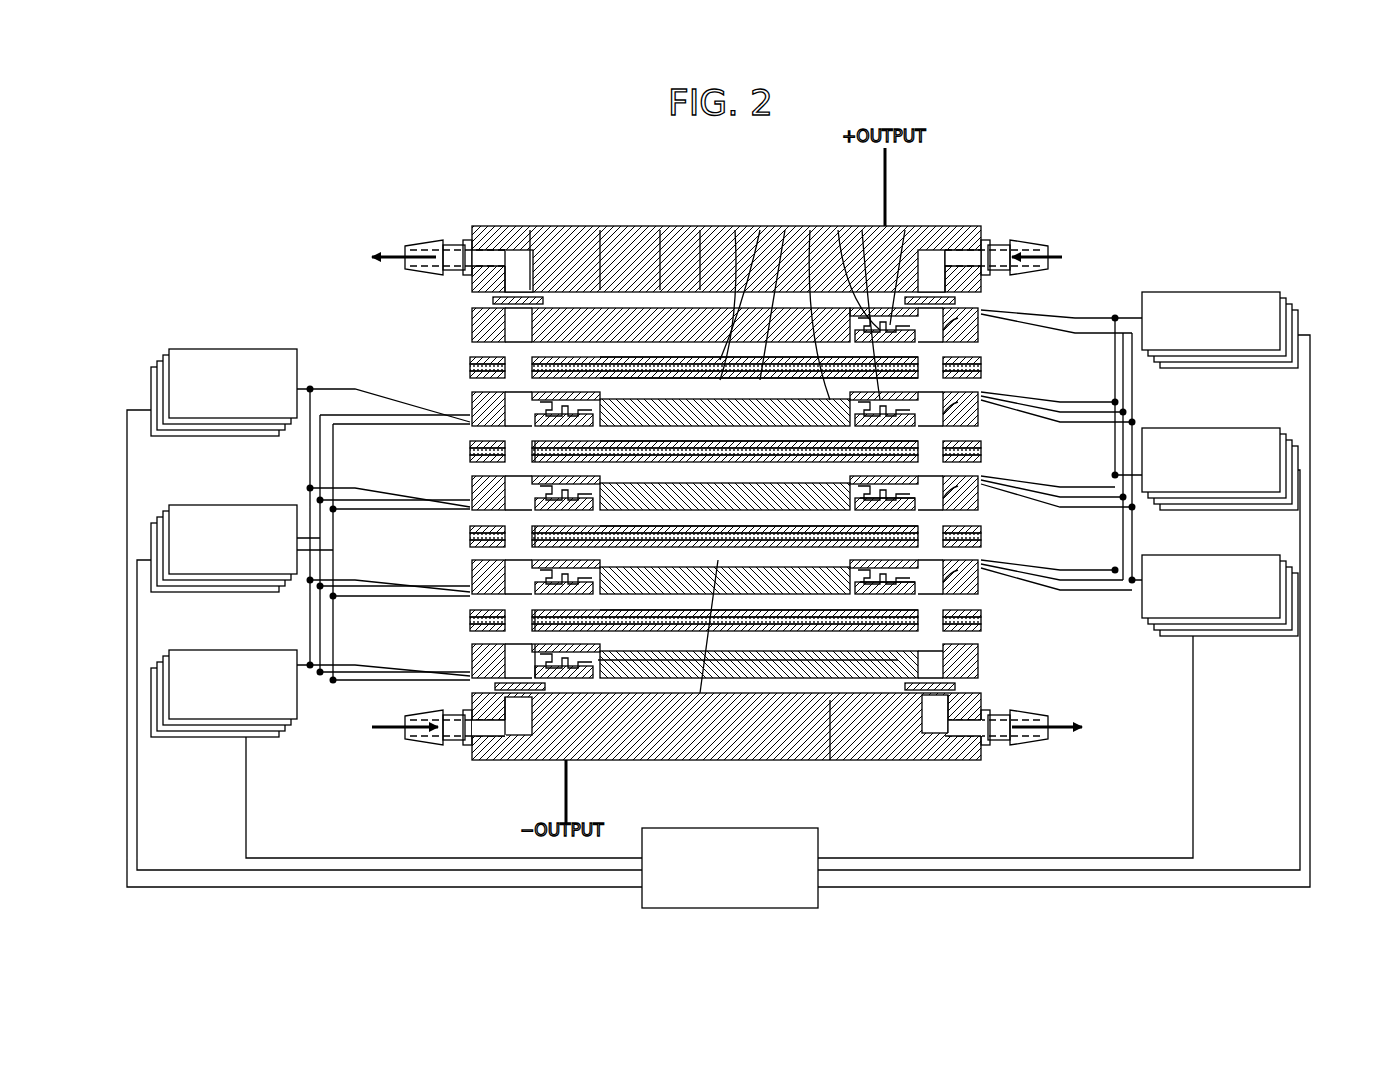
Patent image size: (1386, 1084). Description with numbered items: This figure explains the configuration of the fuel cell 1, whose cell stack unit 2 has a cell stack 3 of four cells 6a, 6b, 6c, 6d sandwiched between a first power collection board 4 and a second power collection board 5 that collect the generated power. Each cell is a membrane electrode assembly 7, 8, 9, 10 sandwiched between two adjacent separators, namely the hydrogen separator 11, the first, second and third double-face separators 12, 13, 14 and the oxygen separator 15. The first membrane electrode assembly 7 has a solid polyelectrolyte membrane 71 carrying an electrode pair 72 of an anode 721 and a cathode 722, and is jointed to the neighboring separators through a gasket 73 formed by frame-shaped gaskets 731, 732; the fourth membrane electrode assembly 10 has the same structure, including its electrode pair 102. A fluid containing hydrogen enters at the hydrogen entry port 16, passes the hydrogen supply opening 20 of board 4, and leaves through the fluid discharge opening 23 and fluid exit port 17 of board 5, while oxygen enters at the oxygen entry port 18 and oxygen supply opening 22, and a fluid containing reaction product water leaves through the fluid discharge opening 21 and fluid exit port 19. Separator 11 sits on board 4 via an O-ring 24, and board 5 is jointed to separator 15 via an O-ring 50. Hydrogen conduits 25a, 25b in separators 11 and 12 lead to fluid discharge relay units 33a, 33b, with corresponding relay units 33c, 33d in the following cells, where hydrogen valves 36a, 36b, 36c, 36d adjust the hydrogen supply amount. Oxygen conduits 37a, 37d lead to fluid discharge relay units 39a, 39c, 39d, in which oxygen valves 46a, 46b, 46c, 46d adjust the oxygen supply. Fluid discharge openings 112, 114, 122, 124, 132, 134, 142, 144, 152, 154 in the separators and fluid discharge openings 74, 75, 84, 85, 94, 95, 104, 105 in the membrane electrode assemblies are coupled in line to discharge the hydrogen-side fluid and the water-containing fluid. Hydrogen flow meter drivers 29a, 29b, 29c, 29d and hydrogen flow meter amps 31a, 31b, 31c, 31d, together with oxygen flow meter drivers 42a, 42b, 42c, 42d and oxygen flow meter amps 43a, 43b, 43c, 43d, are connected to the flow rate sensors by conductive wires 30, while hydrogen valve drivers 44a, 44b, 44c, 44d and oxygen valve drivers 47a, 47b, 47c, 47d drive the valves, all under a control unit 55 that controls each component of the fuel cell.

The fuel cell 1 is at (420, 132).
The cell stack unit 2 is at (440, 193).
The cell stack 3 is at (365, 313).
The first power collection board 4 is at (512, 226).
The second power collection board 5 is at (490, 760).
The cell 6a is at (383, 425).
The cell 6b is at (383, 512).
The cell 6c is at (383, 596).
The cell 6d is at (383, 680).
The first membrane electrode assembly 7 is at (1036, 375).
The second membrane electrode assembly 8 is at (1036, 458).
The third membrane electrode assembly 9 is at (1040, 548).
The fourth membrane electrode assembly 10 is at (1046, 625).
The hydrogen separator 11 is at (1038, 350).
The first double-face separator 12 is at (1038, 432).
The second double-face separator 13 is at (1050, 530).
The third double-face separator 14 is at (1046, 597).
The oxygen separator 15 is at (1046, 659).
The hydrogen entry port 16 is at (1036, 243).
The fluid exit port 17 is at (1040, 745).
The oxygen entry port 18 is at (422, 745).
The fluid exit port 19 is at (415, 244).
The hydrogen supply opening 20 is at (955, 258).
The fluid discharge opening 21 is at (500, 258).
The oxygen supply opening 22 is at (500, 735).
The fluid discharge opening 23 is at (938, 735).
The O-ring 24 is at (493, 300).
The hydrogen conduit 25a is at (735, 230).
The hydrogen conduit 25b is at (785, 230).
The hydrogen flow meter driver 29a is at (1280, 556).
The hydrogen flow meter driver 29b is at (1286, 566).
The hydrogen flow meter driver 29c is at (1292, 590).
The hydrogen flow meter driver 29d is at (1298, 612).
The conductive wire 30 is at (1070, 308).
The hydrogen flow meter amp 31a is at (1228, 428).
The hydrogen flow meter amp 31b is at (1286, 440).
The hydrogen flow meter amp 31c is at (1292, 456).
The hydrogen flow meter amp 31d is at (1298, 470).
The fluid discharge relay unit 33a is at (838, 230).
The fluid discharge relay unit 33b is at (810, 230).
The hydrogen flow meter 33c is at (912, 500).
The hydrogen flow meter 33d is at (912, 584).
The hydrogen valve 36a is at (905, 230).
The hydrogen valve 36b is at (862, 230).
The hydrogen valve 36c is at (900, 490).
The hydrogen valve 36d is at (900, 574).
The oxygen conduit 37a is at (760, 230).
The oxygen conduit 37d is at (760, 690).
The fluid discharge relay unit 39a is at (545, 402).
The oxygen discharge relay unit 39c is at (545, 488).
The fluid discharge relay unit 39d is at (580, 672).
The oxygen flow meter driver 42a is at (232, 348).
The oxygen flow meter driver 42b is at (164, 358).
The oxygen flow meter driver 42c is at (158, 365).
The oxygen flow meter driver 42d is at (152, 400).
The oxygen flow meter amp 43a is at (214, 650).
The oxygen flow meter amp 43b is at (164, 658).
The oxygen flow meter amp 43c is at (158, 668).
The oxygen flow meter amp 43d is at (172, 738).
The hydrogen valve driver 44a is at (1200, 292).
The hydrogen valve driver 44b is at (1286, 300).
The hydrogen valve driver 44c is at (1292, 310).
The hydrogen valve driver 44d is at (1298, 326).
The oxygen valve 46a is at (533, 445).
The oxygen valve 46b is at (533, 530).
The oxygen valve 46c is at (533, 614).
The oxygen valve 46d is at (560, 678).
The oxygen valve driver 47a is at (218, 504).
The oxygen valve driver 47b is at (164, 512).
The oxygen valve driver 47c is at (158, 520).
The oxygen valve driver 47d is at (152, 552).
The O-ring 50 is at (495, 686).
The control unit 55 is at (818, 838).
The solid polyelectrolyte membrane 71 is at (940, 377).
The electrode pair 72 is at (700, 184).
The gasket 73 is at (614, 184).
The fluid discharge opening 74 is at (940, 360).
The fluid discharge opening 75 is at (535, 360).
The fluid discharge opening 84 is at (940, 442).
The fluid discharge opening 85 is at (535, 448).
The fluid discharge opening 94 is at (940, 528).
The fluid discharge opening 95 is at (535, 534).
The oxygen flow passage 102 is at (660, 660).
The fluid discharge opening 104 is at (940, 628).
The fluid discharge opening 105 is at (535, 628).
The fluid discharge opening 112 is at (960, 322).
The fluid discharge opening 114 is at (472, 322).
The fluid discharge opening 122 is at (960, 408).
The fluid discharge opening 124 is at (472, 396).
The fluid discharge opening 132 is at (960, 494).
The fluid discharge opening 134 is at (472, 484).
The fluid discharge opening 142 is at (960, 600).
The fluid discharge opening 144 is at (472, 566).
The fluid discharge opening 152 is at (950, 658).
The fluid discharge opening 154 is at (520, 680).
The anode 721 is at (660, 290).
The cathode 722 is at (700, 290).
The gasket 731 is at (600, 290).
The gasket 732 is at (530, 290).